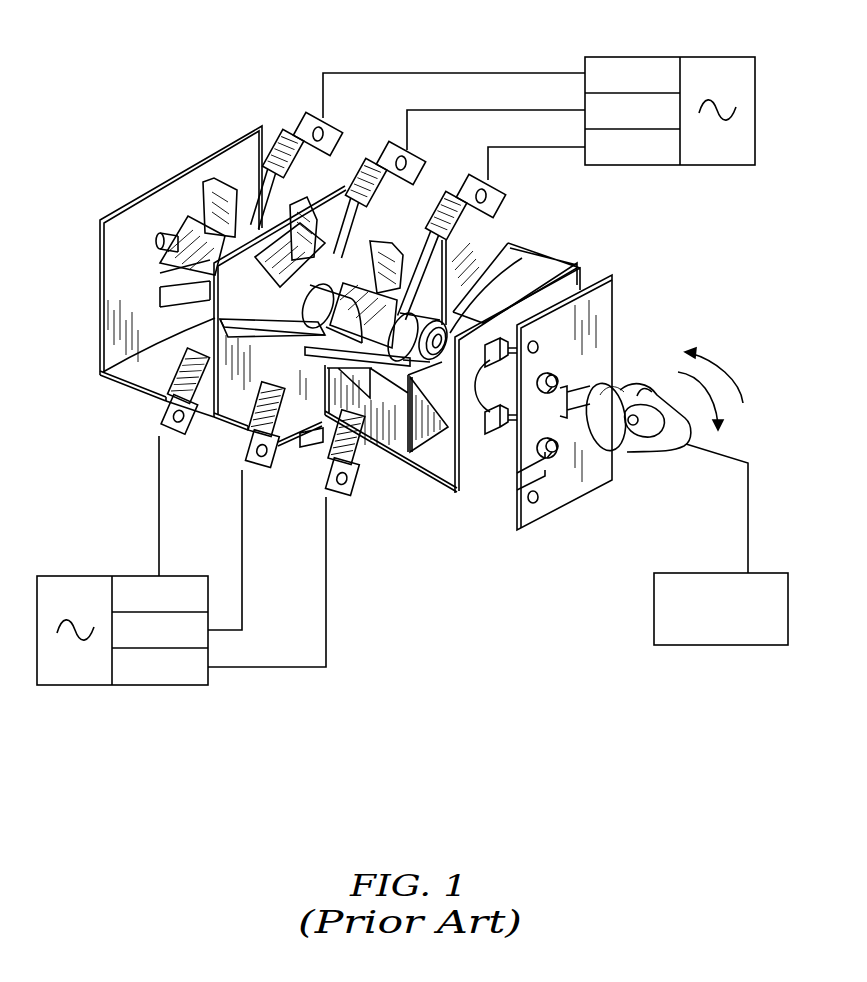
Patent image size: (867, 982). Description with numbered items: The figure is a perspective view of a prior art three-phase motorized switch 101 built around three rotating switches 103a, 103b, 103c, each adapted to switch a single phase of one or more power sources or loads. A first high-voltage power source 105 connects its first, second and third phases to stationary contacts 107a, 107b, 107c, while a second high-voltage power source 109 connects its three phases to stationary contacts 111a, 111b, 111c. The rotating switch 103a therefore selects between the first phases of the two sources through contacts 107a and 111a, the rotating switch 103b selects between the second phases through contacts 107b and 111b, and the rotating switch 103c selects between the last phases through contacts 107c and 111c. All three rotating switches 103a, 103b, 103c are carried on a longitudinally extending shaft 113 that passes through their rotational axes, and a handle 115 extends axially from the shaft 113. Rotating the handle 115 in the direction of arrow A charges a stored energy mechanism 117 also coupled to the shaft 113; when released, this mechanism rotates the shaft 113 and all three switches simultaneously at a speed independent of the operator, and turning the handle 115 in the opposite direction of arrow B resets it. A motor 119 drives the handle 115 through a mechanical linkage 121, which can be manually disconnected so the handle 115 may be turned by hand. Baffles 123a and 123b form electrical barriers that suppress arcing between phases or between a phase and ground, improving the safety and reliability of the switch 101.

The motorized switch 101 is at (117, 68).
The rotating switch 103a is at (339, 105).
The rotating switch 103b is at (421, 141).
The rotating switch 103c is at (511, 174).
The high-voltage power source 105 is at (705, 57).
The stationary contact 107a is at (310, 112).
The stationary contact 107b is at (404, 148).
The stationary contact 107c is at (498, 194).
The high-voltage power source 109 is at (78, 576).
The stationary contact 111a is at (160, 428).
The stationary contact 111b is at (246, 462).
The stationary contact 111c is at (332, 490).
The shaft 113 is at (547, 262).
The handle 115 is at (662, 457).
The stored energy mechanism 117 is at (470, 520).
The motor 119 is at (653, 605).
The mechanical linkage 121 is at (748, 463).
The baffle 123a is at (98, 277).
The baffle 123b is at (215, 320).